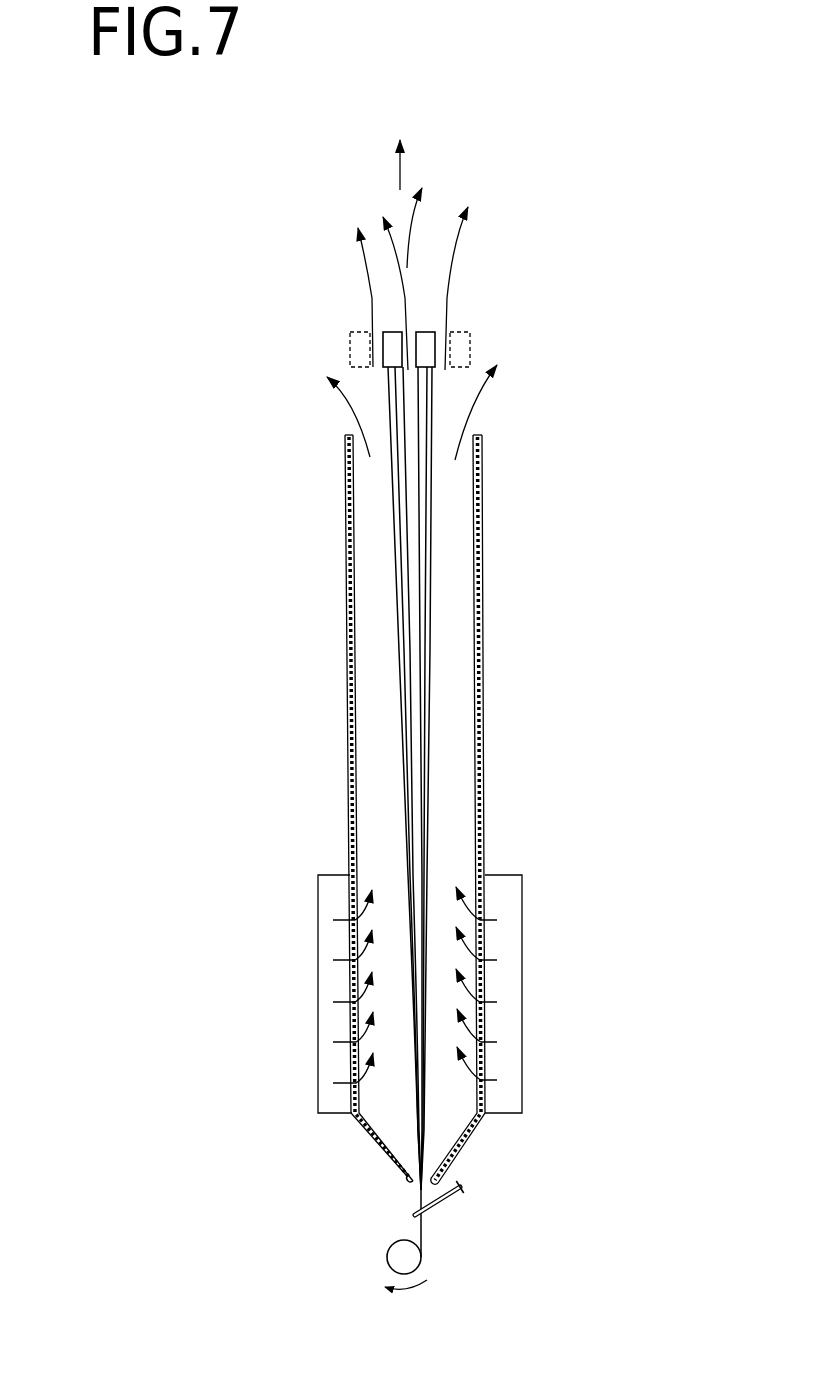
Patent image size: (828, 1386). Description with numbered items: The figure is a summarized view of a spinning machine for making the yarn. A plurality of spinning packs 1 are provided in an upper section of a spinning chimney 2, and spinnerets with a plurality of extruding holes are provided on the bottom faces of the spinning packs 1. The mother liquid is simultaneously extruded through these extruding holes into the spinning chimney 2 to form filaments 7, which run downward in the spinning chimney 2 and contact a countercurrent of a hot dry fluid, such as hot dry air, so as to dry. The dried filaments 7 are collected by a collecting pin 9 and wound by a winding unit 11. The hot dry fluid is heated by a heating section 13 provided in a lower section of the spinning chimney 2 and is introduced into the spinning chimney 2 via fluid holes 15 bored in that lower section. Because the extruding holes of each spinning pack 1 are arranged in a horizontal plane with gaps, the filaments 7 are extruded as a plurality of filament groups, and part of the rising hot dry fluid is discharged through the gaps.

The spinning pack 1 is at (352, 335).
The spinning chimney 2 is at (482, 468).
The filaments 7 is at (432, 605).
The collecting pin 9 is at (447, 1198).
The winding unit 11 is at (397, 1250).
The heating section 13 is at (512, 1010).
The fluid holes 15 is at (480, 915).